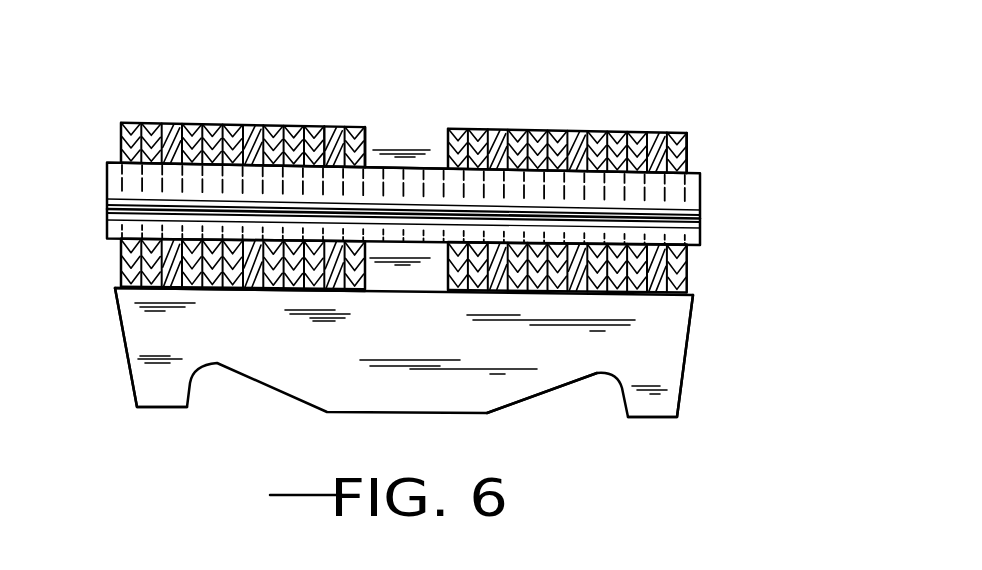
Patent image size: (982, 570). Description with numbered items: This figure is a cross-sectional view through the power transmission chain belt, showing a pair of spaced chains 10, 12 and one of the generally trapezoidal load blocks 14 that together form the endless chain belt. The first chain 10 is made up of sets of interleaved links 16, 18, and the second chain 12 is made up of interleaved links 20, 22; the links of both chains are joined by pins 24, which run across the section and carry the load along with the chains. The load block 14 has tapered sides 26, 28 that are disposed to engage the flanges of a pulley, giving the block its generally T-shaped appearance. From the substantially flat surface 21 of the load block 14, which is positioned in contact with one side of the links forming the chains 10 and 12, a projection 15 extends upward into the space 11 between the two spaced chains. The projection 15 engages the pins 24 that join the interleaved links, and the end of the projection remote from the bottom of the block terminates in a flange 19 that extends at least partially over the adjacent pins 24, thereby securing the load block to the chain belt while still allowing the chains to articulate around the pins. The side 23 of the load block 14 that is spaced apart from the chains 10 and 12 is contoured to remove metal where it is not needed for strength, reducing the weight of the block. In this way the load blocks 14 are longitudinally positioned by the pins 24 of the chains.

The chain 10 is at (170, 124).
The space 11 is at (420, 134).
The chain 12 is at (575, 128).
The load block 14 is at (390, 380).
The projection 15 is at (403, 262).
The link 16 is at (335, 125).
The link 18 is at (355, 125).
The flange 19 is at (400, 140).
The link 20 is at (660, 128).
The flat surface 21 is at (272, 290).
The link 22 is at (683, 127).
The side 23 is at (533, 400).
The pin 24 is at (700, 202).
The tapered side 26 is at (127, 373).
The tapered side 28 is at (690, 347).